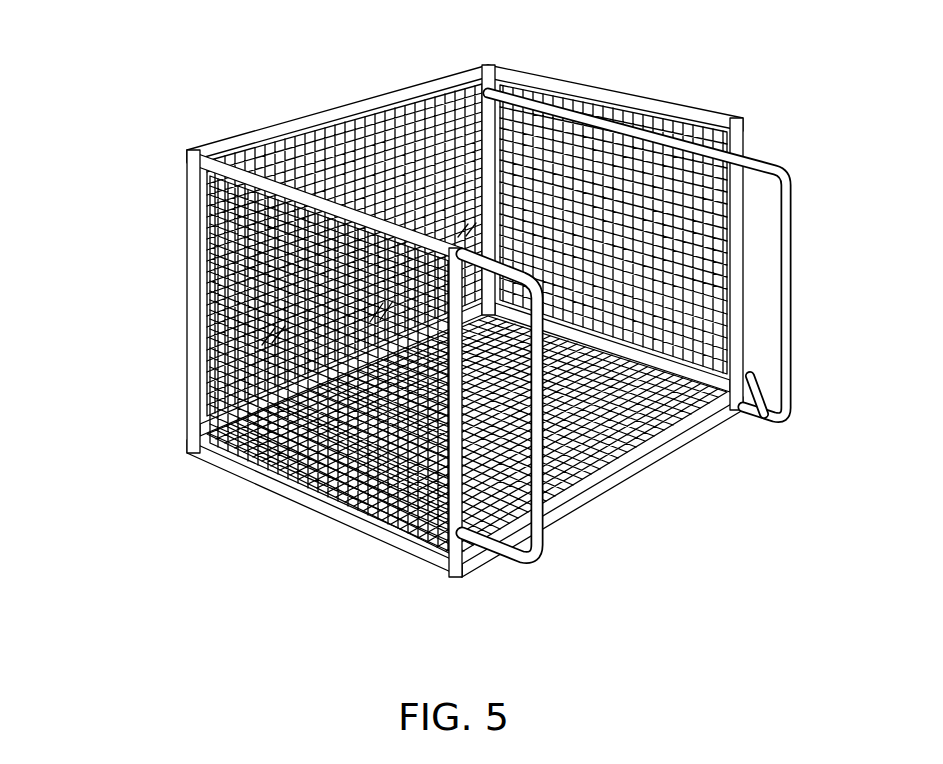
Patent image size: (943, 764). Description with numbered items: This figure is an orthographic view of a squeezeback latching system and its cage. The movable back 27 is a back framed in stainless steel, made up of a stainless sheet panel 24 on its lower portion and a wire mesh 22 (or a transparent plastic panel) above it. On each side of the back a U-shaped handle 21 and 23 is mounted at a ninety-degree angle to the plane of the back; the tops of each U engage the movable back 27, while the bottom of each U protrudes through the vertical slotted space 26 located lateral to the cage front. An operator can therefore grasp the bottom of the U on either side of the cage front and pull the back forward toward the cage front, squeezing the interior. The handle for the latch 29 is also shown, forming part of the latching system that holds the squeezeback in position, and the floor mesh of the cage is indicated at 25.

The U-shaped handle 21 is at (760, 160).
The wire mesh 22 is at (407, 143).
The U-shaped handle 23 is at (527, 280).
The stainless sheet panel 24 is at (452, 238).
The floor mesh 25 is at (493, 463).
The vertical slotted space 26 is at (403, 233).
The movable back 27 is at (210, 312).
The latch 29 is at (752, 404).